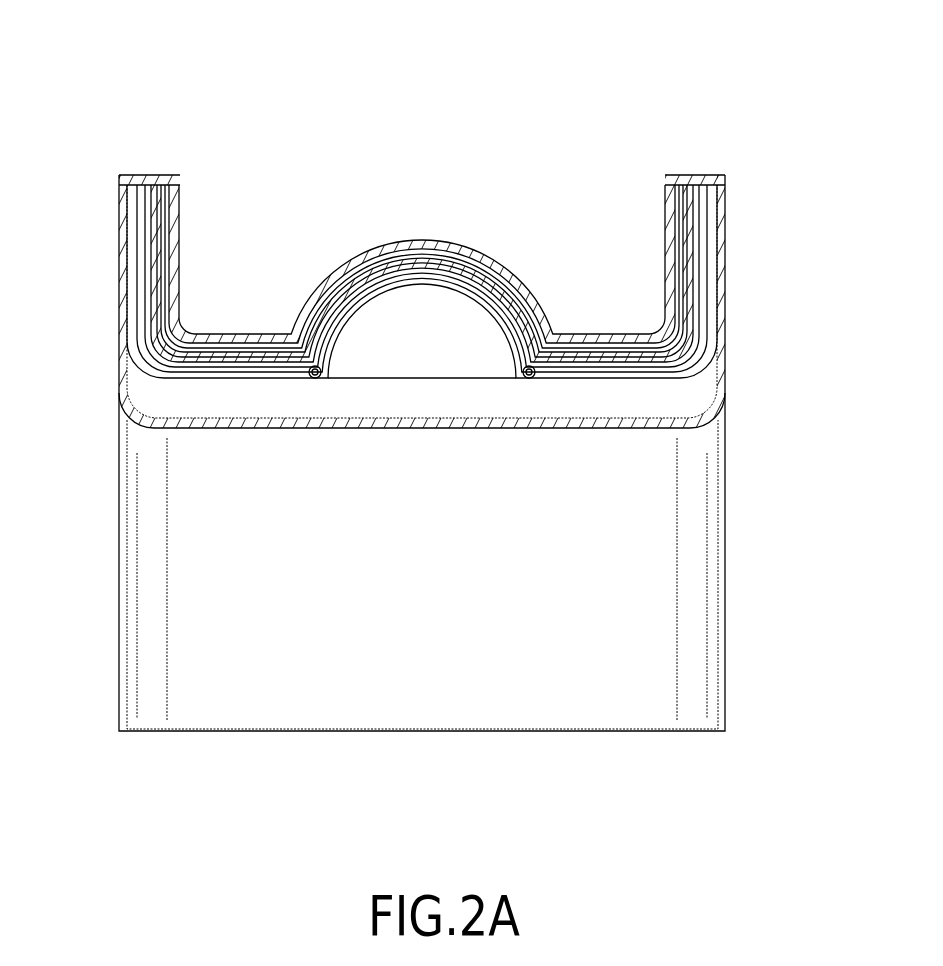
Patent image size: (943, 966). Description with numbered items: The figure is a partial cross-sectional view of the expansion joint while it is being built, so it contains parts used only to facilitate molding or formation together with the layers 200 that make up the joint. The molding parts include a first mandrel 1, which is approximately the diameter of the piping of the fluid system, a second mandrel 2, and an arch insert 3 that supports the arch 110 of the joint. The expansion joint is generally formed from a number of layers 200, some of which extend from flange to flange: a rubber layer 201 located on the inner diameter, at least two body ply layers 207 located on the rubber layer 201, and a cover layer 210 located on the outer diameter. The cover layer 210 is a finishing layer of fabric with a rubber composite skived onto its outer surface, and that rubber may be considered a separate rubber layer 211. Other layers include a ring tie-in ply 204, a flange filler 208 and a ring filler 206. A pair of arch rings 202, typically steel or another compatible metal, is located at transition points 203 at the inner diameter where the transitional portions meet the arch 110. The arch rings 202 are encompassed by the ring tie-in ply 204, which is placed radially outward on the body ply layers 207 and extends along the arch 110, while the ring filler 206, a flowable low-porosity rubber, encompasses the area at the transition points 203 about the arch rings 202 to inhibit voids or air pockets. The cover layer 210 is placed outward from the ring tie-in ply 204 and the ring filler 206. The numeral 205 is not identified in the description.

The layers 200 is at (395, 100).
The arch 110 is at (372, 200).
The first mandrel 1 is at (152, 423).
The second mandrel 2 is at (147, 392).
The arch insert 3 is at (378, 330).
The rubber layer 201 is at (200, 372).
The arch rings 202 is at (535, 367).
The transition points 203 is at (313, 362).
The ring tie-in ply 204 is at (388, 280).
The fifth layer 205 is at (427, 277).
The ring filler 206 is at (545, 373).
The body ply layers 207 is at (172, 350).
The flange filler 208 is at (687, 232).
The cover layer 210 is at (682, 191).
The rubber layer 211 is at (677, 193).